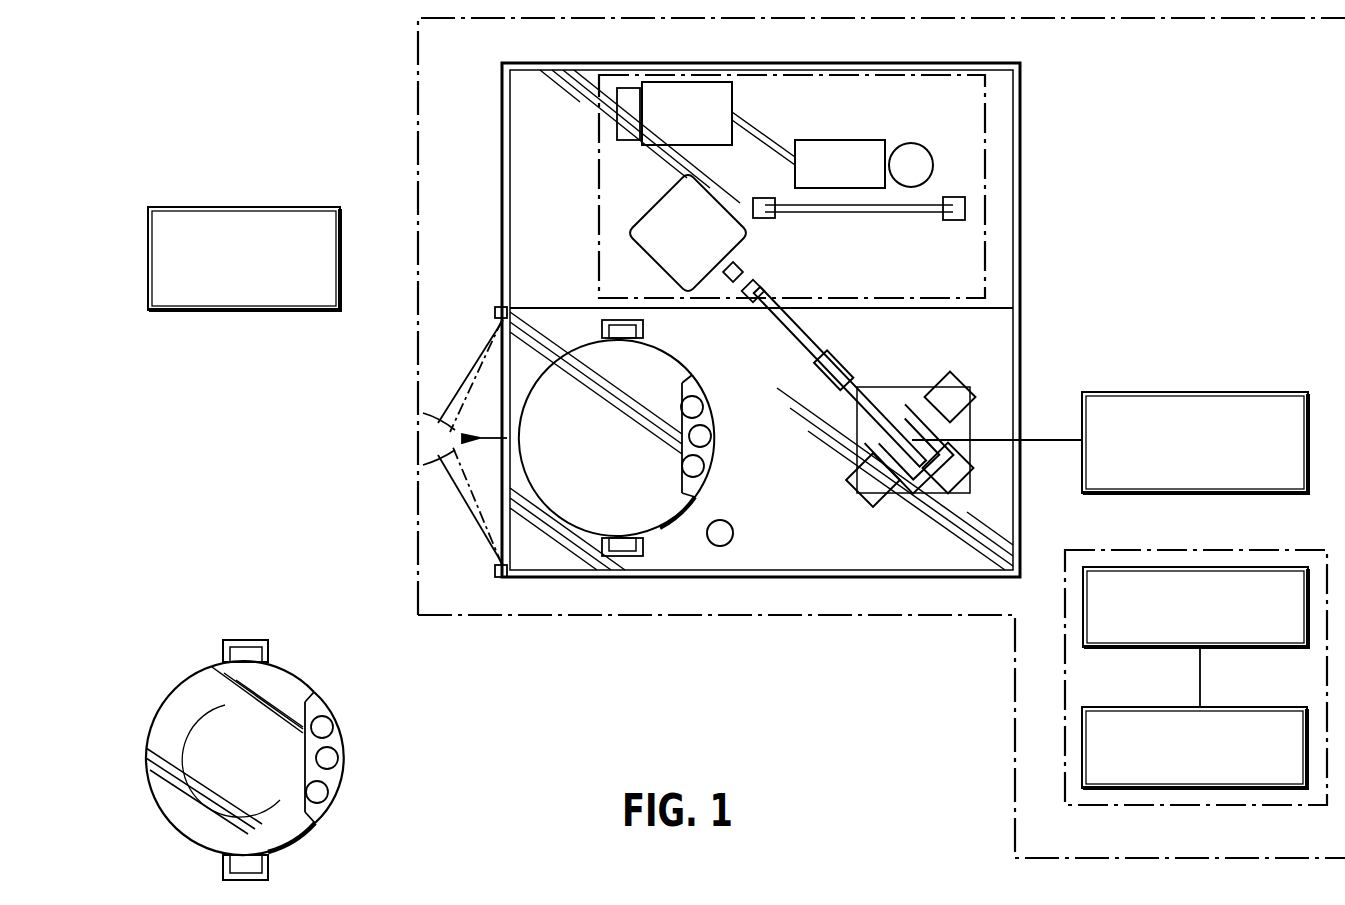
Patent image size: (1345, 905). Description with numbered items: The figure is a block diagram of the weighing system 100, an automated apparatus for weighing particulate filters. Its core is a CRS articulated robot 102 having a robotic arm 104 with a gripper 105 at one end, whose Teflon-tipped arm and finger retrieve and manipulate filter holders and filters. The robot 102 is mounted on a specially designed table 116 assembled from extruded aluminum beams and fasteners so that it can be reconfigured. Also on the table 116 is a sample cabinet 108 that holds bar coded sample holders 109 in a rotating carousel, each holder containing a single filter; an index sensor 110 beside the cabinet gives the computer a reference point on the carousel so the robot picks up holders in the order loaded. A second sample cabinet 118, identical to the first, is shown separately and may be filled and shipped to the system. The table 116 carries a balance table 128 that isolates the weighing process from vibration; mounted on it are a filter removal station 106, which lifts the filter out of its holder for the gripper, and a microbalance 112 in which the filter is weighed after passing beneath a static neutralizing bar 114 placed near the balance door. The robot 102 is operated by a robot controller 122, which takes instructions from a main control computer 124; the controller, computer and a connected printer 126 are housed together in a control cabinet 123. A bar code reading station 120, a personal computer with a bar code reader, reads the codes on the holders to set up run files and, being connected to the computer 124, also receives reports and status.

The weighing system 100 is at (802, 620).
The articulated robot 102 is at (903, 398).
The robotic arm 104 is at (820, 350).
The gripper 105 is at (745, 276).
The filter removal station 106 is at (656, 220).
The sample cabinet 108 is at (660, 366).
The sample holder 109 is at (694, 412).
The index sensor 110 is at (733, 530).
The microbalance 112 is at (822, 147).
The static neutralizing bar 114 is at (845, 212).
The table 116 is at (718, 578).
The second sample cabinet 118 is at (294, 690).
The bar code reading station 120 is at (185, 207).
The robot controller 122 is at (1120, 393).
The control cabinet 123 is at (1084, 528).
The main control computer 124 is at (1248, 567).
The printer 126 is at (1130, 707).
The balance table 128 is at (990, 153).